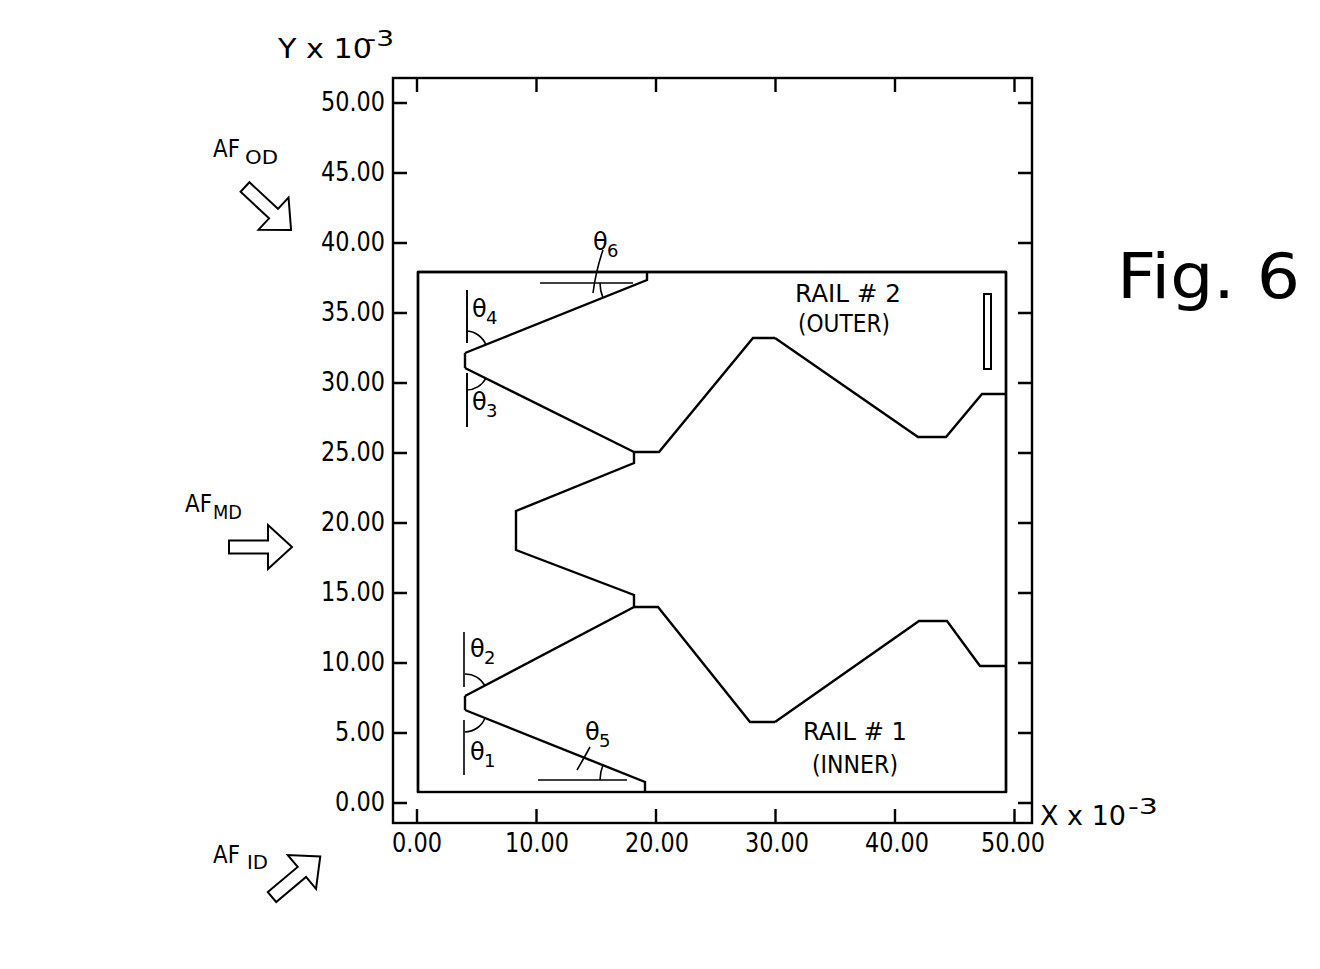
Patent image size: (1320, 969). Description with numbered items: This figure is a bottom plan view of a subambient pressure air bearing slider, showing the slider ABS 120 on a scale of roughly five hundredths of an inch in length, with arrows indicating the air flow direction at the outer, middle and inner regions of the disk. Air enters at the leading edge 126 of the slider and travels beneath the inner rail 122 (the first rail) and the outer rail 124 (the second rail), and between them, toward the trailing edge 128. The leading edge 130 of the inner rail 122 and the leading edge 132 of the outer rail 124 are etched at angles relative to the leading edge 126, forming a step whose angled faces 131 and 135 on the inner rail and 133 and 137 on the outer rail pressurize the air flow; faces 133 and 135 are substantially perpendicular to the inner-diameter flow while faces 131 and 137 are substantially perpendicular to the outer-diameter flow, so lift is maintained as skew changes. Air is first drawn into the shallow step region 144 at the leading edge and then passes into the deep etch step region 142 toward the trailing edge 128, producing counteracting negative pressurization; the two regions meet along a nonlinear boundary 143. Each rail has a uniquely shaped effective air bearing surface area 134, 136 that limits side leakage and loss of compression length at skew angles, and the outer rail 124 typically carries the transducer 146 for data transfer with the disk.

The slider ABS 120 is at (635, 213).
The inner rail 122 is at (837, 672).
The outer rail 124 is at (858, 270).
The leading edge 126 is at (420, 550).
The trailing edge 128 is at (1006, 526).
The leading edge of inner rail 130 is at (467, 704).
The angled face 131 is at (550, 648).
The leading edge of outer rail 132 is at (467, 362).
The angled face 133 is at (568, 417).
The effective air bearing surface area of inner rail 134 is at (692, 680).
The angled face 135 is at (550, 740).
The effective air bearing surface area of outer rail 136 is at (707, 367).
The angled face 137 is at (528, 328).
The deep etch step region 142 is at (828, 551).
The nonlinear boundary 143 is at (516, 530).
The shallow step region 144 is at (484, 470).
The transducer 146 is at (984, 320).